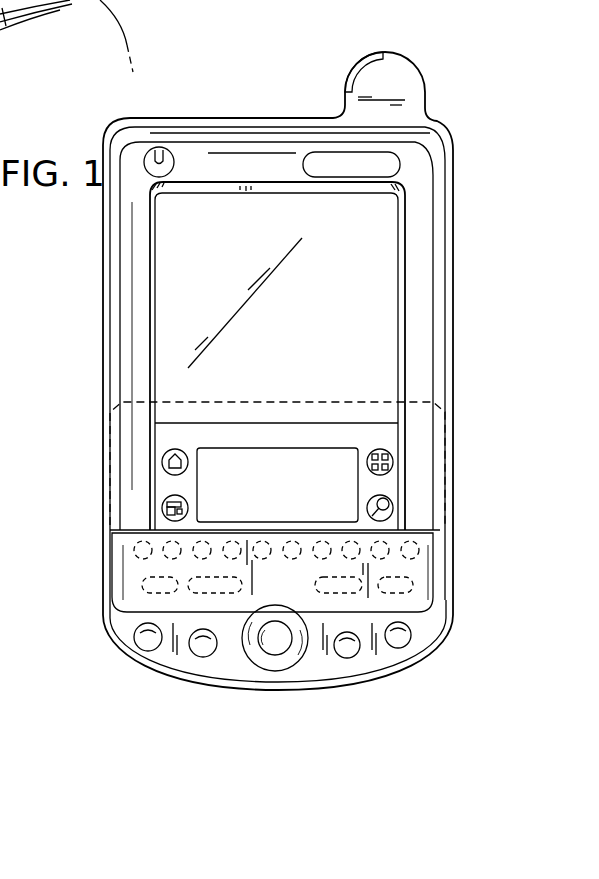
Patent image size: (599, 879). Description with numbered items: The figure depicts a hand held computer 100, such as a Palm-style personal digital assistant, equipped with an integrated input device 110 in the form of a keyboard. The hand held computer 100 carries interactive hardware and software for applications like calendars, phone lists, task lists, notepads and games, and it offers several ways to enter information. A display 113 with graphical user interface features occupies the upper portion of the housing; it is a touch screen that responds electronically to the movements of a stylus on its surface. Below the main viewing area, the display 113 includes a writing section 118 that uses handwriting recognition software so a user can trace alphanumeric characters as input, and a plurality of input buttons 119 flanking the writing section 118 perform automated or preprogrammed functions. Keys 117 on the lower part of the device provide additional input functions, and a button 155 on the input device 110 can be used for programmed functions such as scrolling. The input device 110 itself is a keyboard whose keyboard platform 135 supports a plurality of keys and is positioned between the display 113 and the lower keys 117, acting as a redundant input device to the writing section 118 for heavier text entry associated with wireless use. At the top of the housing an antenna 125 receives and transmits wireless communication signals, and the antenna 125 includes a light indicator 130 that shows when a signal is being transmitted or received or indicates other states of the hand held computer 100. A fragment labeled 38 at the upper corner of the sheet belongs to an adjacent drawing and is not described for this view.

The adjacent figure component 38 is at (66, 36).
The hand held computer 100 is at (305, 371).
The input device 110 is at (462, 620).
The display 113 is at (348, 296).
The keys 117 is at (203, 657).
The writing section 118 is at (285, 502).
The input buttons 119 is at (162, 508).
The antenna 125 is at (395, 67).
The light indicator 130 is at (362, 67).
The keyboard platform 135 is at (420, 568).
The button 155 is at (285, 648).